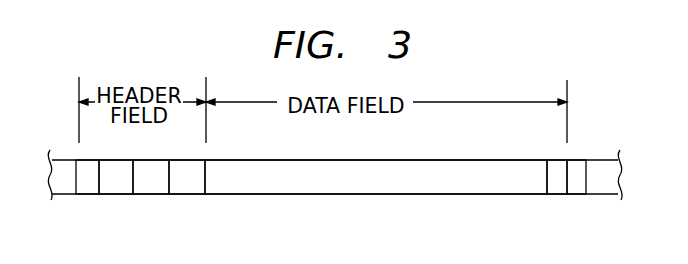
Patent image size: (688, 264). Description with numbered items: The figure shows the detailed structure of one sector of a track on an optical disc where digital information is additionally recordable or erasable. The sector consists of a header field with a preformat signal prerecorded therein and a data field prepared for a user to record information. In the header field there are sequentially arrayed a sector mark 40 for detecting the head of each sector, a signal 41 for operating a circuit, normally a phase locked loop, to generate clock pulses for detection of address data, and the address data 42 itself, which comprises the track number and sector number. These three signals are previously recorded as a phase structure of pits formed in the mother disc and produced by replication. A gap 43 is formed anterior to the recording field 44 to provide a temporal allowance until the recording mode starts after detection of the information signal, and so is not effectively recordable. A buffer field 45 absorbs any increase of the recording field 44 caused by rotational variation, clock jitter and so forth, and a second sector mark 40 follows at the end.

The sector mark 40 is at (90, 194).
The signal for operating a circuit 41 is at (122, 194).
The address data 42 is at (152, 194).
The gap 43 is at (188, 194).
The recording field 44 is at (337, 166).
The buffer field 45 is at (558, 194).